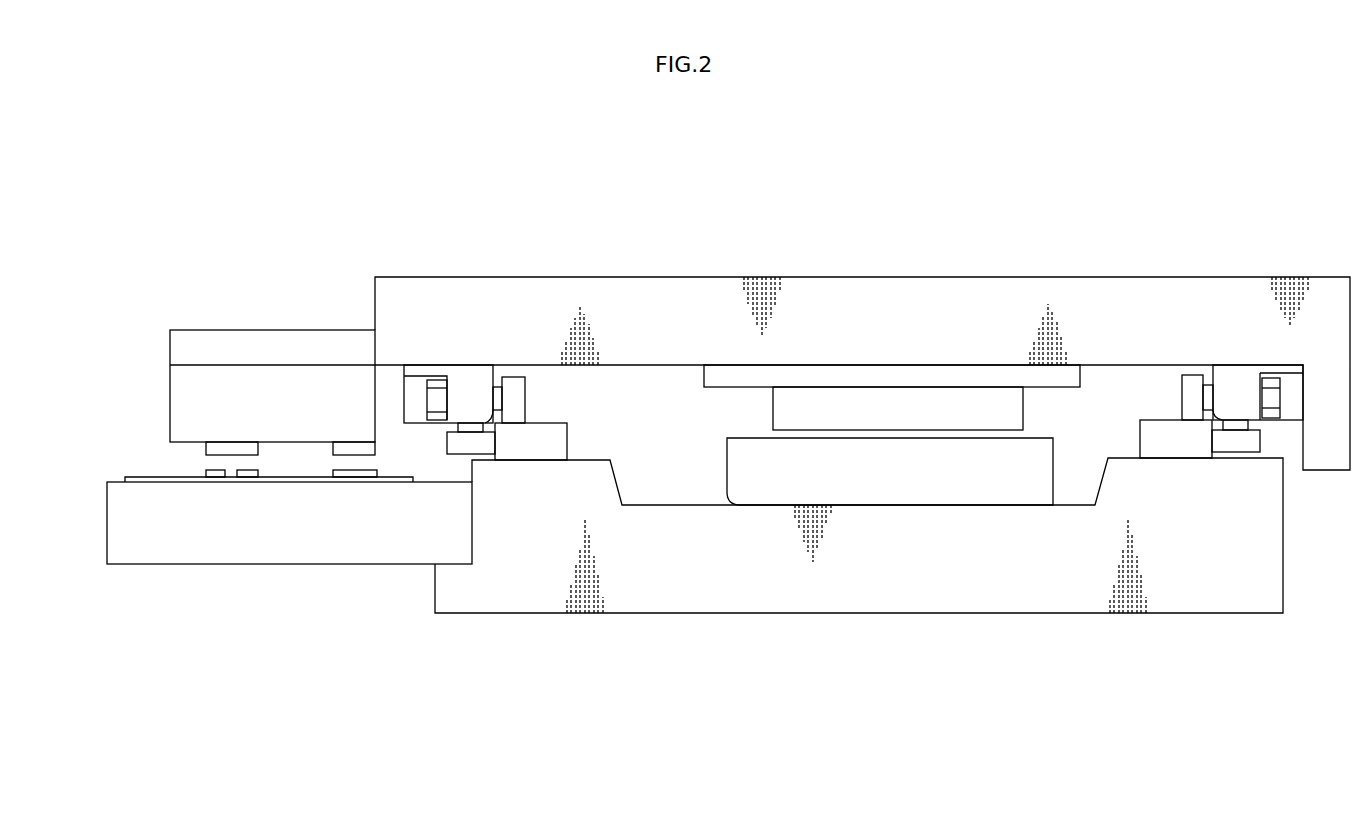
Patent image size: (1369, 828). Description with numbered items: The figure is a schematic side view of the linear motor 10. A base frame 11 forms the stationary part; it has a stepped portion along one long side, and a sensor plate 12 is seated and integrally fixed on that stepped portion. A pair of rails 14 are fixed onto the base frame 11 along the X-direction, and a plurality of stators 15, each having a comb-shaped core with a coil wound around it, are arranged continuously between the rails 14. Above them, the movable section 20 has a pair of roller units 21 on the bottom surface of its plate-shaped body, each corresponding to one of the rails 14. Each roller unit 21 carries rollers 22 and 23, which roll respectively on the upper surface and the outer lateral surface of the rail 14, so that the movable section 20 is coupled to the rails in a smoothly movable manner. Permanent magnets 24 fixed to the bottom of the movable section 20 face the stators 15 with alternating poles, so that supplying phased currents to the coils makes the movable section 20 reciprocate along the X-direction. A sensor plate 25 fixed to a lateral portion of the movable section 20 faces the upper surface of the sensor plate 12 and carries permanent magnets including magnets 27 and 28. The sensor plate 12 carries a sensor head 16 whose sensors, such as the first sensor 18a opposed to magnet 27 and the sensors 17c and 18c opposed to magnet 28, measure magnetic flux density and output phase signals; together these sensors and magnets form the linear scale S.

The linear motor 10 is at (1182, 178).
The linear scale S is at (125, 330).
The base frame 11 is at (1220, 603).
The sensor plate 12 is at (290, 552).
The rail 14 is at (532, 448).
The stator 15 is at (925, 487).
The sensor head 16 is at (150, 475).
The second sensor 17c is at (210, 483).
The second sensor 18c is at (249, 483).
The first sensor 18a is at (347, 483).
The movable section 20 is at (915, 290).
The roller unit 21 is at (476, 372).
The roller 22 is at (520, 408).
The roller 23 is at (452, 445).
The permanent magnet 24 is at (910, 398).
The sensor plate 25 is at (175, 405).
The permanent magnet 27 is at (345, 445).
The permanent magnet 28 is at (235, 445).